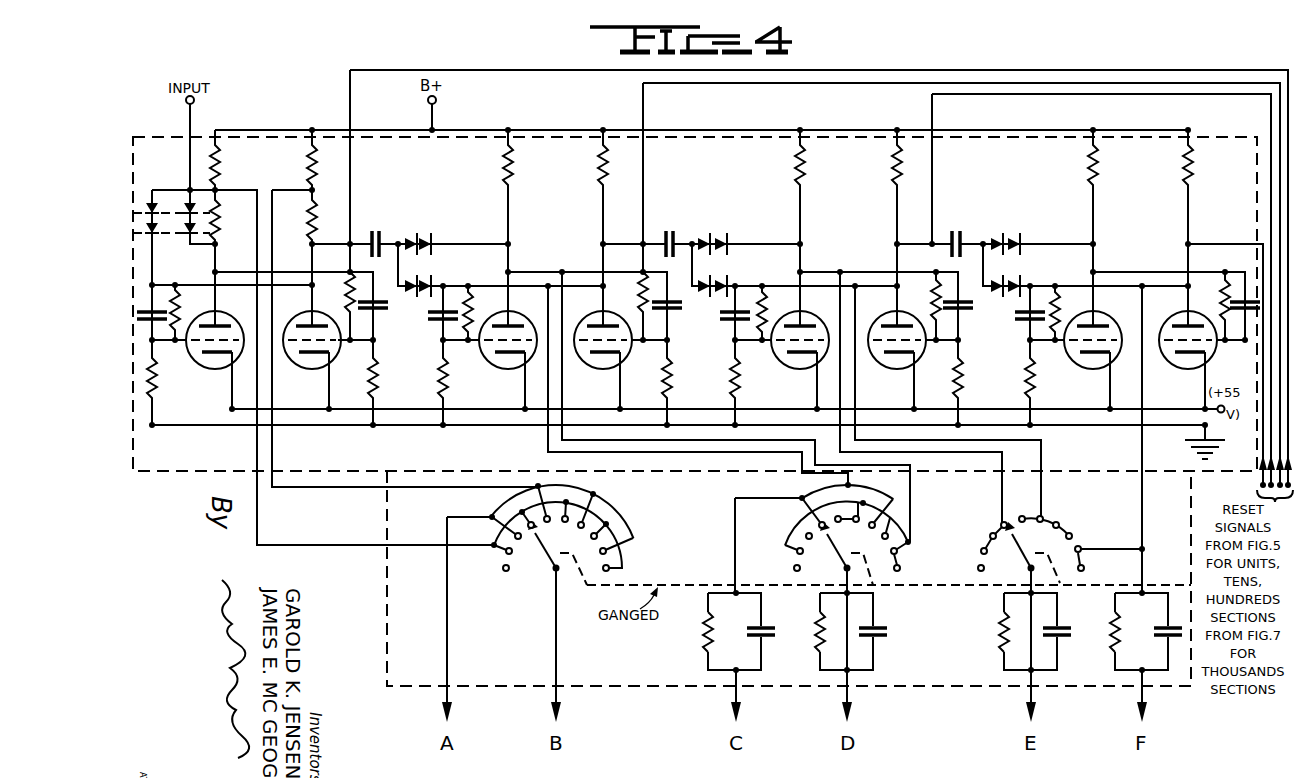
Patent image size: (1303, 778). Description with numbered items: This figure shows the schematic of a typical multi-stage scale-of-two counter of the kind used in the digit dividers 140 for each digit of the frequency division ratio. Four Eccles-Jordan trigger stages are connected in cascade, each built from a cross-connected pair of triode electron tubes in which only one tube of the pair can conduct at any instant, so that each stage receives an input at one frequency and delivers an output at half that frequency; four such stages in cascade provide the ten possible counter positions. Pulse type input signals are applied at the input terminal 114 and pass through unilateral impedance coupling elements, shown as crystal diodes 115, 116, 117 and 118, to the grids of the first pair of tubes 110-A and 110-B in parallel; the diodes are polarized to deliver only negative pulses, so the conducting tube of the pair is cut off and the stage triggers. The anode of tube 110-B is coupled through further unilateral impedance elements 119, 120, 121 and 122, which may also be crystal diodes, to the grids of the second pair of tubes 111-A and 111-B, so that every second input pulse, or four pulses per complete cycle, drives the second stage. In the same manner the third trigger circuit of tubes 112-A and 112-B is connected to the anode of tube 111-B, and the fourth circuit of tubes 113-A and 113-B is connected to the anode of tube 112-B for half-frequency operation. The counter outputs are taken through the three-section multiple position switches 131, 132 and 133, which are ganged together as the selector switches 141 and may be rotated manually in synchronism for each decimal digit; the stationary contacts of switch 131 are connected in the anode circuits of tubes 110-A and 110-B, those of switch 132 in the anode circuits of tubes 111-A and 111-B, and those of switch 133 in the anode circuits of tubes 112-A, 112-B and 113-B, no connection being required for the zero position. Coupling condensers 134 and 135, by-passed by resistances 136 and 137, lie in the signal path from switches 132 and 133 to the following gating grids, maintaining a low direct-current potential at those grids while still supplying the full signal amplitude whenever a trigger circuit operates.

The input terminal 114 is at (193, 103).
The crystal diode 115 is at (182, 208).
The crystal diode 116 is at (184, 229).
The crystal diode 117 is at (148, 200).
The crystal diode 118 is at (142, 224).
The unilateral impedance element 119 is at (402, 240).
The unilateral impedance element 120 is at (425, 240).
The unilateral impedance element 121 is at (401, 294).
The unilateral impedance element 122 is at (427, 286).
The triode electron tube 110-A is at (196, 362).
The triode electron tube 110-B is at (293, 362).
The triode electron tube 111-A is at (489, 362).
The triode electron tube 111-B is at (584, 362).
The triode electron tube 112-A is at (781, 362).
The triode electron tube 112-B is at (878, 362).
The triode electron tube 113-A is at (1074, 362).
The triode electron tube 113-B is at (1169, 362).
The digit dividers 140 is at (727, 140).
The multiple position switch 131 is at (531, 548).
The multiple position switch 132 is at (826, 548).
The multiple position switch 133 is at (1010, 548).
The coupling condenser 134 is at (880, 636).
The coupling condenser 135 is at (1103, 636).
The resistance 136 is at (774, 636).
The resistance 137 is at (999, 636).
The selector switches 141 is at (648, 688).